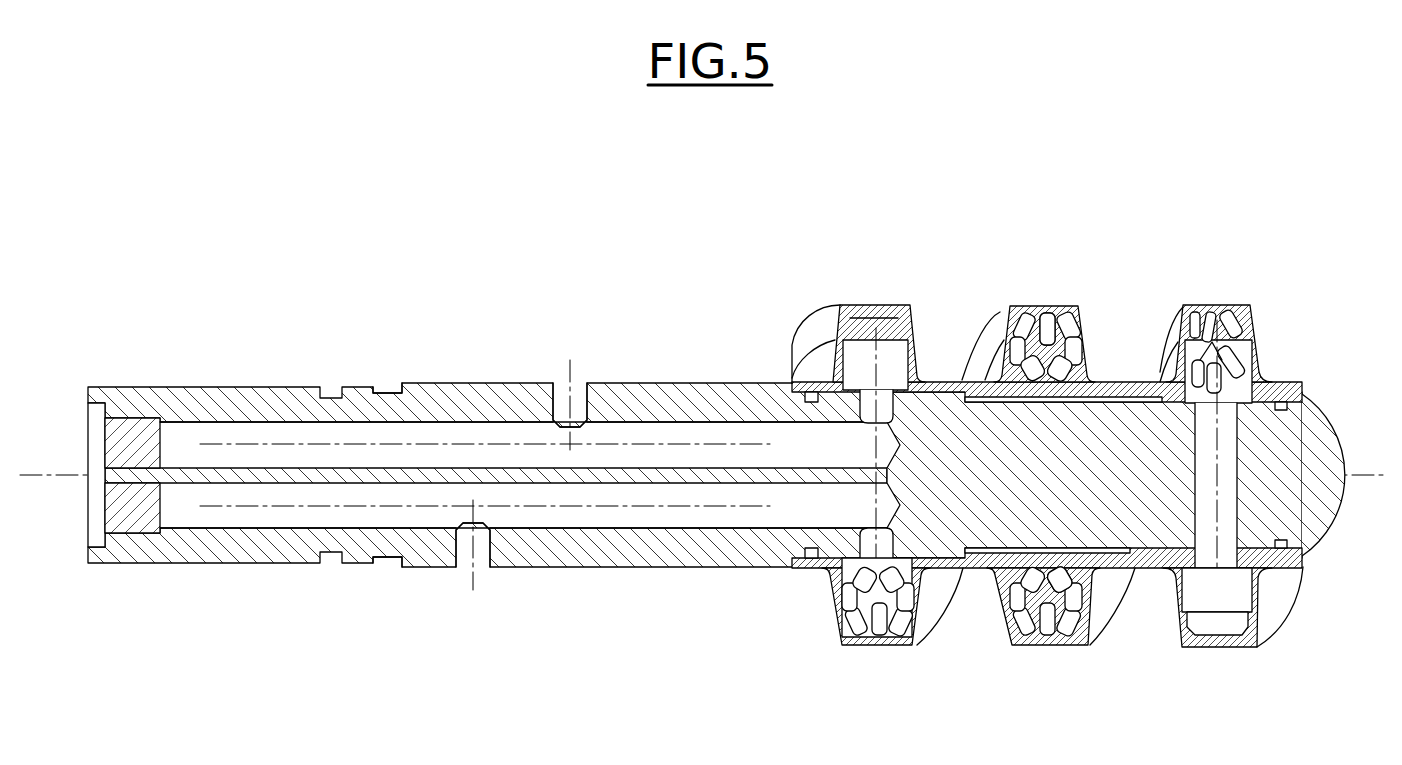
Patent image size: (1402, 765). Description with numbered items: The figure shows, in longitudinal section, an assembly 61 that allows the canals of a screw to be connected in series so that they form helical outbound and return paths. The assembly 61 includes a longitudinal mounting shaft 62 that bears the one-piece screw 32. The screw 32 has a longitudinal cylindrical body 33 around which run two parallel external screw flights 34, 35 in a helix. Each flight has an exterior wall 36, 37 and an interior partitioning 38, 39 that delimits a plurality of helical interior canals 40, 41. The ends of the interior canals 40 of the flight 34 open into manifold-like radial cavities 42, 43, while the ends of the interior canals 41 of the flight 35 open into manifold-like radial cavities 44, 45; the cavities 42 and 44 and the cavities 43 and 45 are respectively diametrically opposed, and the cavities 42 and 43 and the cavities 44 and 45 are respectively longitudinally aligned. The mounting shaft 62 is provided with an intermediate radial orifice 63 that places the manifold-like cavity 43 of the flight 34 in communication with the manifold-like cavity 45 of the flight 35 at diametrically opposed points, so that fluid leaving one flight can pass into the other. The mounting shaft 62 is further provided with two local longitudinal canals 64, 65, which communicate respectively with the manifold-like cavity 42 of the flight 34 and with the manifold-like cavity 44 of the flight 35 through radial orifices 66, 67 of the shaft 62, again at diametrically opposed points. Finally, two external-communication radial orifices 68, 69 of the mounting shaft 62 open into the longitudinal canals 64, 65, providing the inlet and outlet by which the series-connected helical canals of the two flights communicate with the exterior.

The one-piece screw 32 is at (790, 290).
The longitudinal cylindrical body 33 is at (1285, 393).
The screw flight 34 is at (1028, 314).
The screw flight 35 is at (1095, 630).
The exterior wall 36 is at (1224, 433).
The exterior wall 37 is at (1052, 637).
The interior partitioning 38 is at (1046, 330).
The interior partitioning 39 is at (1043, 618).
The helical interior canals 40 is at (1025, 325).
The helical interior canals 41 is at (1070, 625).
The manifold-like radial cavity 42 is at (850, 568).
The manifold-like radial cavity 43 is at (1205, 597).
The manifold-like radial cavity 44 is at (891, 357).
The manifold-like radial cavity 45 is at (1237, 392).
The assembly 61 is at (636, 312).
The longitudinal mounting shaft 62 is at (385, 393).
The intermediate radial orifice 63 is at (1225, 523).
The local longitudinal canal 64 is at (260, 525).
The local longitudinal canal 65 is at (260, 430).
The radial orifice 66 is at (795, 550).
The radial orifice 67 is at (855, 390).
The external-communication radial orifice 68 is at (462, 560).
The external-communication radial orifice 69 is at (565, 390).